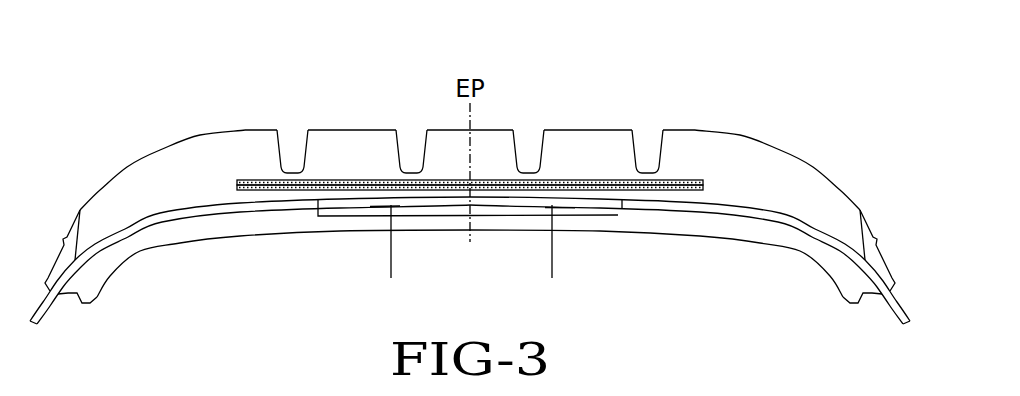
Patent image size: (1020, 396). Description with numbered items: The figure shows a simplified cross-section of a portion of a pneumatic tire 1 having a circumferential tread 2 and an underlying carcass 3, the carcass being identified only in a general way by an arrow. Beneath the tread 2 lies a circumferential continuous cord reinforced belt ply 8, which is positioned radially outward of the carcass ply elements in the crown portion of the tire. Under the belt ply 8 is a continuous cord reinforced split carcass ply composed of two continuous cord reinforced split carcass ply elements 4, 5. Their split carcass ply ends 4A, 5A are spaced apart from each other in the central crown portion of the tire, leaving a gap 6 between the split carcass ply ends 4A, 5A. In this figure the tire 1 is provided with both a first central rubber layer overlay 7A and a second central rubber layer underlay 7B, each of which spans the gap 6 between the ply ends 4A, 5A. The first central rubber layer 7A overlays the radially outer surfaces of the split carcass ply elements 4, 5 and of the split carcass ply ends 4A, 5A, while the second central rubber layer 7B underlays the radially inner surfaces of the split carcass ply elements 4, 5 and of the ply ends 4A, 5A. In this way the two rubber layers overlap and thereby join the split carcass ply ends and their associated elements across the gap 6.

The pneumatic tire 1 is at (104, 112).
The circumferential tread 2 is at (358, 128).
The carcass 3 is at (760, 178).
The split carcass ply element 4 is at (218, 212).
The split carcass ply element 5 is at (723, 207).
The split carcass ply end 4A is at (385, 205).
The split carcass ply end 5A is at (558, 207).
The gap 6 is at (538, 268).
The first central rubber layer overlay 7A is at (318, 199).
The second central rubber layer underlay 7B is at (618, 215).
The circumferential continuous cord reinforced belt ply 8 is at (612, 178).